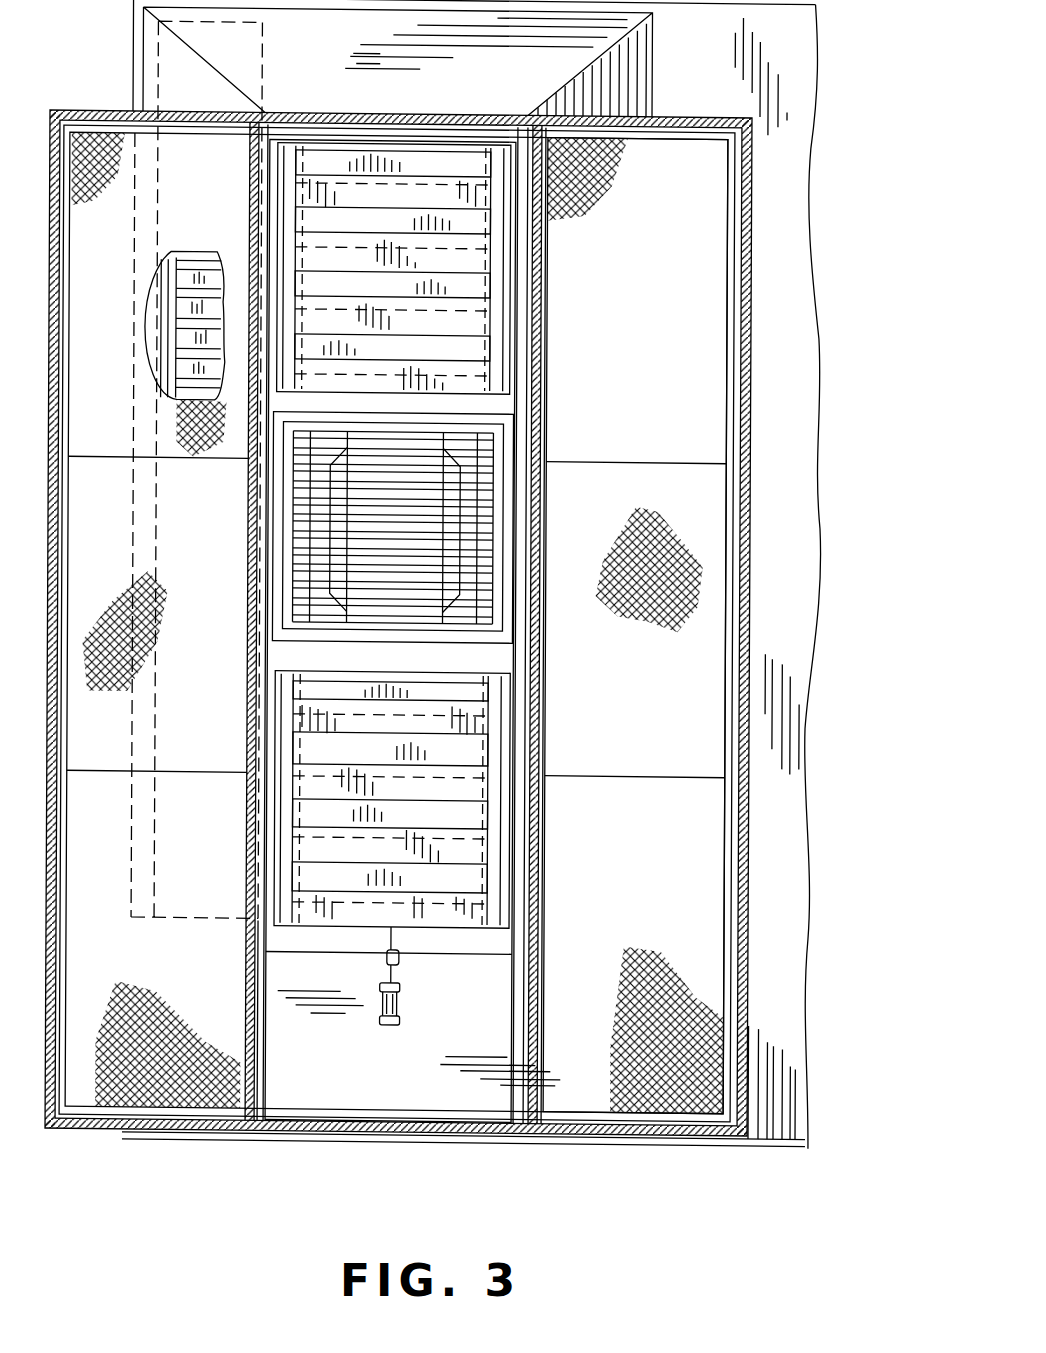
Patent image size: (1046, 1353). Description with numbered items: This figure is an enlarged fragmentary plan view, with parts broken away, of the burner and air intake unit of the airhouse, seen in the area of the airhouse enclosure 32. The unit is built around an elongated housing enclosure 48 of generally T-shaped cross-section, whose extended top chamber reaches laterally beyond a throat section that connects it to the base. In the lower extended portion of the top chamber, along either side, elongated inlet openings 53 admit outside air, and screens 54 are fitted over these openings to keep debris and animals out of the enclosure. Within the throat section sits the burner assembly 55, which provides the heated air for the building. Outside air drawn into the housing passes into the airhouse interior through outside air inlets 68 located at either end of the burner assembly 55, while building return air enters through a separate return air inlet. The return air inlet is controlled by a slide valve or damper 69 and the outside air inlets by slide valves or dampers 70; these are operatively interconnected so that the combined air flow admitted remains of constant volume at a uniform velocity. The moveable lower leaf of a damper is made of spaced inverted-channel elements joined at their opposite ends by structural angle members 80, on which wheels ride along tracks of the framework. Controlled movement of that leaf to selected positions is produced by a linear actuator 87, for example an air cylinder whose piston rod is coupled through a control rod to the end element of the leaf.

The enclosure 32 is at (796, 182).
The housing enclosure 48 is at (760, 470).
The inlet openings 53 is at (662, 383).
The screens 54 is at (688, 599).
The burner assembly 55 is at (519, 538).
The outside air inlets 68 is at (447, 227).
The slide valve or damper 69 is at (151, 331).
The slide valve or damper 70 is at (354, 140).
The structural angle members 80 is at (507, 282).
The linear actuator 87 is at (391, 998).